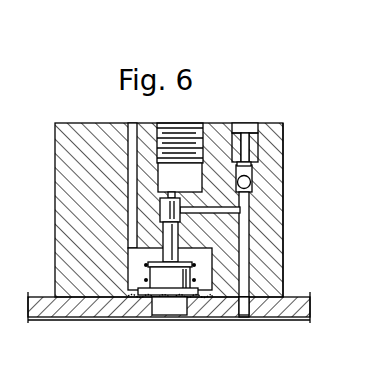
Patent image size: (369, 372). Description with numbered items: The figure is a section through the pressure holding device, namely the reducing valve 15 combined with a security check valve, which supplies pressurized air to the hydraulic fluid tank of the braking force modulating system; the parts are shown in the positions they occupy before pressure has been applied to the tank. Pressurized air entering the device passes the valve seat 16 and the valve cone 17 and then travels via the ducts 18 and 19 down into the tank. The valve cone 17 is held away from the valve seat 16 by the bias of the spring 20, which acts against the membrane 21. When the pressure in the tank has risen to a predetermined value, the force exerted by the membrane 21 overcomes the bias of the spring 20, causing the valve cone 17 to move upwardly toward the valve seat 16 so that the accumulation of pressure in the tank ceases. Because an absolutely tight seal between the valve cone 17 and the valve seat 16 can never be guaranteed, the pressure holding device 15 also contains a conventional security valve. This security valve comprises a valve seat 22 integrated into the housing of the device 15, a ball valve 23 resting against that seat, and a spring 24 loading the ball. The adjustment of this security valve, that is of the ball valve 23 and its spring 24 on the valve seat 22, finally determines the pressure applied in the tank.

The reducing valve 15 is at (70, 116).
The valve seat 16 is at (162, 209).
The valve cone 17 is at (165, 224).
The duct 18 is at (245, 225).
The duct 19 is at (250, 248).
The spring 20 is at (147, 275).
The membrane 21 is at (166, 316).
The valve seat 22 is at (252, 192).
The ball valve 23 is at (252, 181).
The spring 24 is at (256, 158).